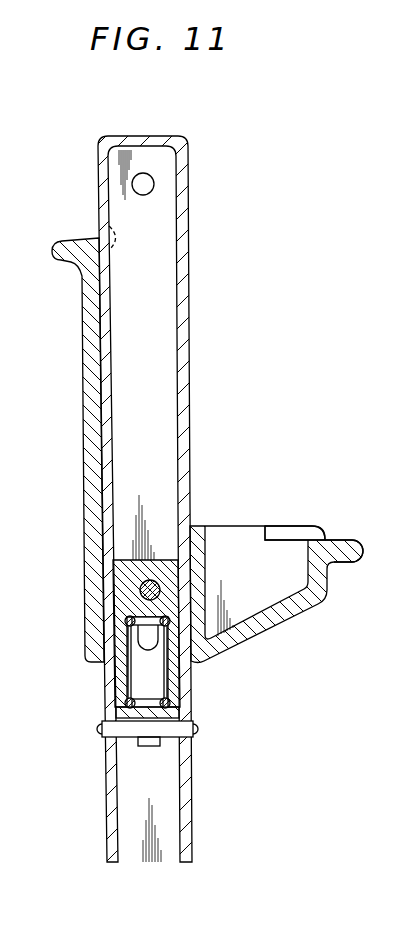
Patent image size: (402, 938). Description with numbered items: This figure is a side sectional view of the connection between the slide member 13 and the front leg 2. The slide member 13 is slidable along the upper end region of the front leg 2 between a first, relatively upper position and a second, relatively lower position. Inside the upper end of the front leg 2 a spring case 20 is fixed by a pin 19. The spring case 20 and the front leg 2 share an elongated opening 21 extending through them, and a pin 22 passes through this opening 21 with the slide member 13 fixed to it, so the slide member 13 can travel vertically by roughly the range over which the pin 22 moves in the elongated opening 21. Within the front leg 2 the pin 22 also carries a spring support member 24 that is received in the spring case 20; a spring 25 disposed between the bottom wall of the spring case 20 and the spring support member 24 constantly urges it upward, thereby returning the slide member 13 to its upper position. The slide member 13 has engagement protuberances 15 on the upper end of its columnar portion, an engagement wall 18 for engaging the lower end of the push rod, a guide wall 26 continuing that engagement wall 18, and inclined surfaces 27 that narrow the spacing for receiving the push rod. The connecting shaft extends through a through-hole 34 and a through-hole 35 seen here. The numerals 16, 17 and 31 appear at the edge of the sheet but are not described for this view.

The front leg 2 is at (190, 411).
The slide member 13 is at (88, 455).
The engagement protuberances 15 is at (100, 212).
The member 16 is at (401, 264).
The member 17 is at (401, 325).
The engagement wall 18 is at (308, 572).
The pin 19 is at (160, 746).
The spring case 20 is at (192, 704).
The elongated opening 21 is at (125, 668).
The pin 22 is at (140, 591).
The spring support member 24 is at (100, 528).
The spring 25 is at (188, 668).
The guide wall 26 is at (333, 541).
The inclined surfaces 27 is at (296, 532).
The member 31 is at (401, 392).
The through-hole 34 is at (386, 123).
The through-hole 35 is at (150, 183).